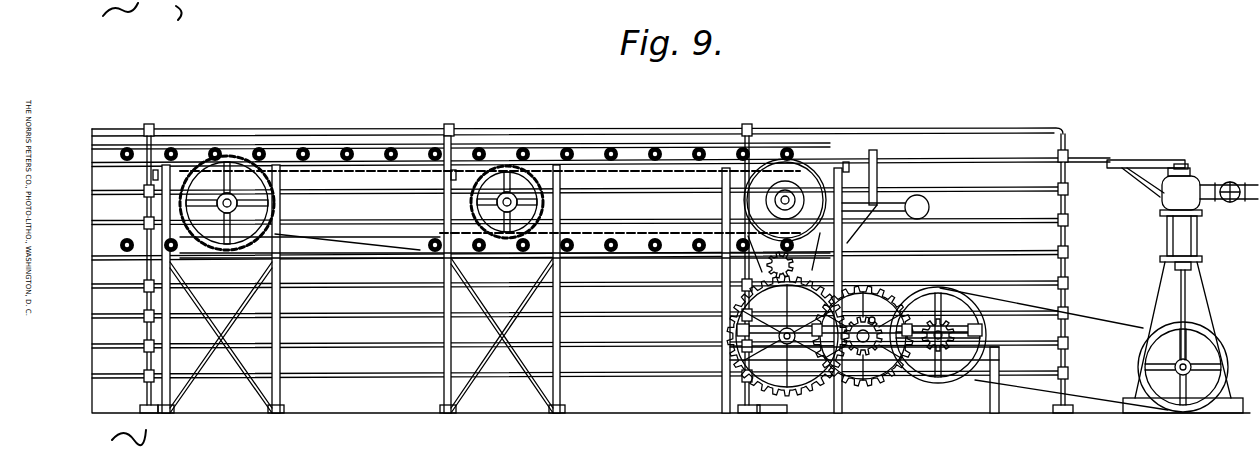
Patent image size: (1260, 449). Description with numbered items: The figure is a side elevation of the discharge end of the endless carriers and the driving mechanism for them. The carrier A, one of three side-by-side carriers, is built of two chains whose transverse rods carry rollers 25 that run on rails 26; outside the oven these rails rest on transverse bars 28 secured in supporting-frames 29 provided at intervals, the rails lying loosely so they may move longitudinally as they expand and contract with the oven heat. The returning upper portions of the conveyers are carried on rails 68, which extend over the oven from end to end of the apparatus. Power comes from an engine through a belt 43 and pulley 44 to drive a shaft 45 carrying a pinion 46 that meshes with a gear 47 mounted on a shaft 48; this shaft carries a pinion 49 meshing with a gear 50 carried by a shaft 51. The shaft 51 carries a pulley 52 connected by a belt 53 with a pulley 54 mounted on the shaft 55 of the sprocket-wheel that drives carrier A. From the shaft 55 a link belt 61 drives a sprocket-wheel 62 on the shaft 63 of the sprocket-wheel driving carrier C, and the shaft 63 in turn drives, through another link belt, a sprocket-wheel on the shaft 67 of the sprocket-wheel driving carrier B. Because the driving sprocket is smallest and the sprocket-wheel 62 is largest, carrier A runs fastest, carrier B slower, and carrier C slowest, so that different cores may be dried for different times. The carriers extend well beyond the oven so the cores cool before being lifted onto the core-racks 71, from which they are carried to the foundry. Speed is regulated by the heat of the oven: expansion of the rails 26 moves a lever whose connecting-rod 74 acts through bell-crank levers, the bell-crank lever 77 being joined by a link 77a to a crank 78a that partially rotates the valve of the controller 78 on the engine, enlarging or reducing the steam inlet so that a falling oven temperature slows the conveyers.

The endless carrier A is at (108, 150).
The rollers 25 is at (611, 149).
The rails 26 is at (622, 258).
The transverse bars 28 is at (152, 176).
The supporting-frames 29 is at (278, 302).
The belt 43 is at (1103, 316).
The pulley 44 is at (982, 331).
The shaft 45 is at (936, 345).
The pinion 46 is at (950, 322).
The gear 47 is at (888, 283).
The shaft 48 is at (868, 322).
The pinion 49 is at (873, 324).
The gear 50 is at (770, 395).
The shaft 51 is at (780, 338).
The pulley 52 is at (783, 340).
The belt 53 is at (775, 265).
The pulley 54 is at (806, 170).
The shaft 55 is at (699, 240).
The link belt 61 is at (633, 175).
The sprocket-wheel 62 is at (257, 222).
The shaft 63 is at (236, 202).
The shaft 67 is at (517, 202).
The rails 68 is at (680, 170).
The core-racks 71 is at (968, 128).
The connecting-rod 74 is at (228, 129).
The bell-crank lever 77 is at (1132, 177).
The link 77a is at (1163, 166).
The controller 78 is at (1172, 188).
The crank 78a is at (1186, 165).